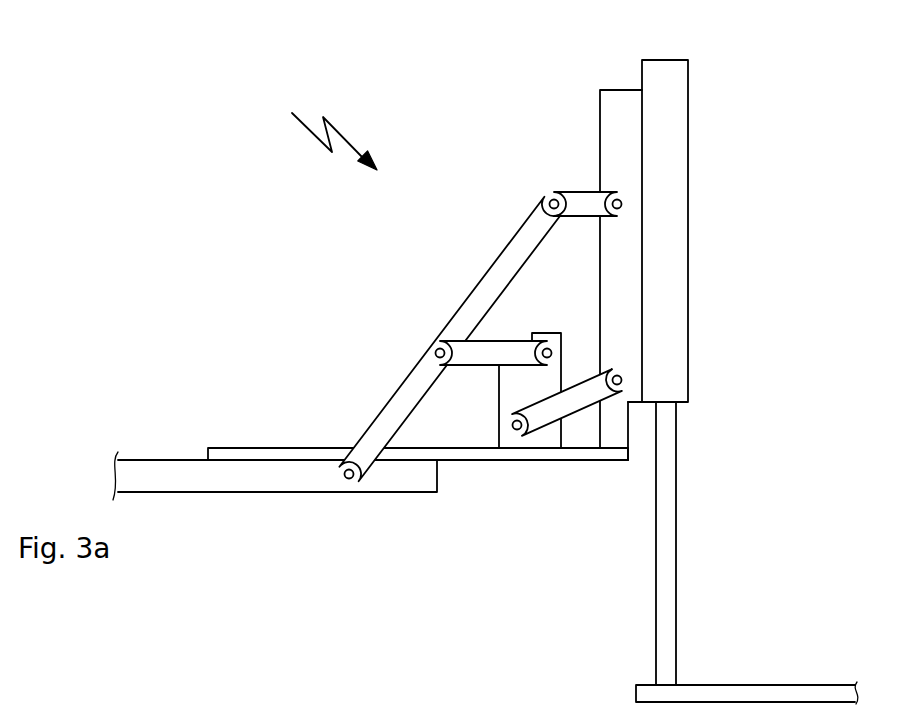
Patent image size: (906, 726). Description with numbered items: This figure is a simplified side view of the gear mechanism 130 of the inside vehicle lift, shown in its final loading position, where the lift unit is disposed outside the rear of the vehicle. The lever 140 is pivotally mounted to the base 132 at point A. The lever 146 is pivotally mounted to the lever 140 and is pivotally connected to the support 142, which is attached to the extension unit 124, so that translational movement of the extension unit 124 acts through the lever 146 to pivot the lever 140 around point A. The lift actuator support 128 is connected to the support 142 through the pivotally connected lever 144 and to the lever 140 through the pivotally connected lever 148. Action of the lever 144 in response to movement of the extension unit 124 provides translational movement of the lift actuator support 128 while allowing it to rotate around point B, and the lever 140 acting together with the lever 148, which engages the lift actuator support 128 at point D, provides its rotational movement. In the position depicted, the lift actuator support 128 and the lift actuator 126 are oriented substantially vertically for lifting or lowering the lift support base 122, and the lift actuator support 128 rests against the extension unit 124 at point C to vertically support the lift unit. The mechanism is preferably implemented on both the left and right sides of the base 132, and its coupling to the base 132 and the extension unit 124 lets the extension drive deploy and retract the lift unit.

The lift support base 122 is at (755, 685).
The extension unit 124 is at (240, 448).
The lift actuator 126 is at (688, 160).
The lift actuator support 128 is at (600, 122).
The gear mechanism 130 is at (334, 156).
The base 132 is at (148, 460).
The lever 140 is at (403, 380).
The support 142 is at (500, 392).
The lever 144 is at (580, 412).
The lever 146 is at (490, 342).
The lever 148 is at (557, 192).
The point A is at (348, 486).
The point B is at (517, 437).
The point C is at (615, 460).
The point D is at (612, 200).